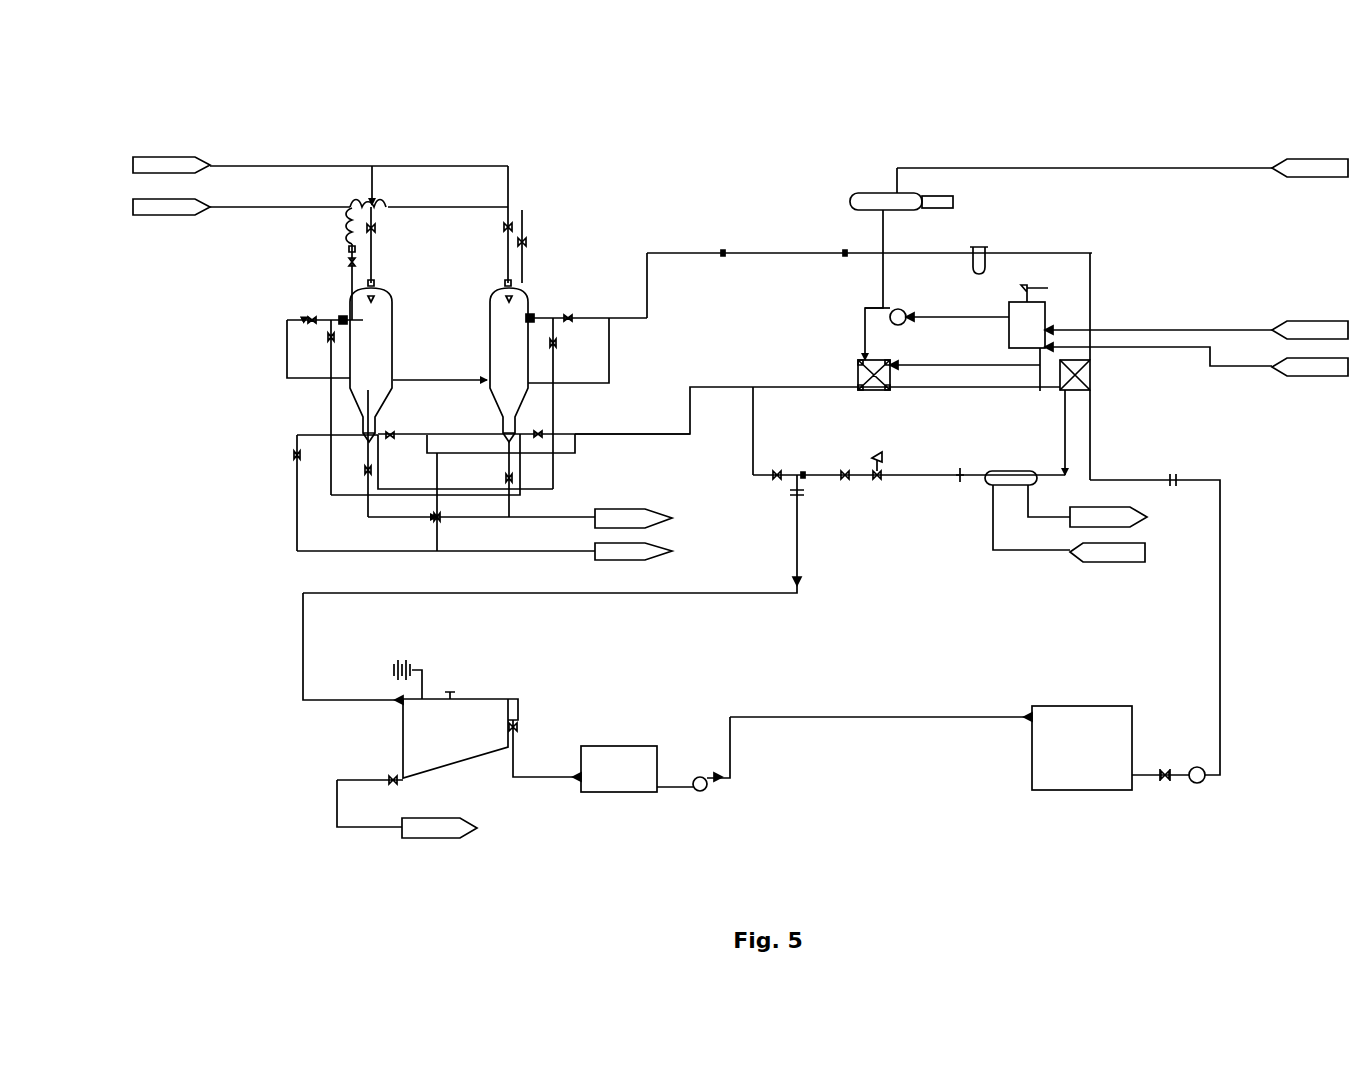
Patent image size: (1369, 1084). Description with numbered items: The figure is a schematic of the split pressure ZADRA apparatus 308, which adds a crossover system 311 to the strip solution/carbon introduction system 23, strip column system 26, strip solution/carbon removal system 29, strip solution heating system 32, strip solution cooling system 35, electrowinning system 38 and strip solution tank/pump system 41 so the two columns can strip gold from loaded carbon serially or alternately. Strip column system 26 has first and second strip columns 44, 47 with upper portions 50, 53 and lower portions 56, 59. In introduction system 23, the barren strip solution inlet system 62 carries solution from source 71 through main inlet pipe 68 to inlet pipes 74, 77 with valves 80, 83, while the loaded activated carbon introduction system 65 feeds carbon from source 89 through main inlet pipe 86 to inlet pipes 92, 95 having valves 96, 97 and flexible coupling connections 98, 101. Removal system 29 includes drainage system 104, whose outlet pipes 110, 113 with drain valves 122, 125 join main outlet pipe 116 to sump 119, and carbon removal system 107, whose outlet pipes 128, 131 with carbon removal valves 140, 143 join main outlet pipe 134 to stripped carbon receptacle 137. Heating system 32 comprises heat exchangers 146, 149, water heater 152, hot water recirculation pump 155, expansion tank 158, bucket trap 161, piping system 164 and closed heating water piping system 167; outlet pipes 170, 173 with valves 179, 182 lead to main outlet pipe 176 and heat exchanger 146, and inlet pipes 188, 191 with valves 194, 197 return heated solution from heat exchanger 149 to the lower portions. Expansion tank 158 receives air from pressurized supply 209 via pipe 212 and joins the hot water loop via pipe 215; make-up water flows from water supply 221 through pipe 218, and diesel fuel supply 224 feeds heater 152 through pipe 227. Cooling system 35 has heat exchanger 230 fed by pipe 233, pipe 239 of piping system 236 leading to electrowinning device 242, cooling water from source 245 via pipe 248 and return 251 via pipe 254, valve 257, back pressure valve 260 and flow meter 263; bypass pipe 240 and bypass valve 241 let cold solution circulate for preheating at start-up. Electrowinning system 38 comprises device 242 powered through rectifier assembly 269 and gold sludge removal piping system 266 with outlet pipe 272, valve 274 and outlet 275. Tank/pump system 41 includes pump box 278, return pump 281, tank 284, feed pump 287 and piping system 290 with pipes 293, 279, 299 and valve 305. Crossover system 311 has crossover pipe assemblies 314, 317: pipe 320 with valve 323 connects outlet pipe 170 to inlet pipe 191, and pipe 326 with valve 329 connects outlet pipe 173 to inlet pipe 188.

The strip solution/carbon introduction system 23 is at (456, 104).
The strip column system 26 is at (216, 277).
The strip solution/carbon removal system 29 is at (655, 490).
The strip solution heating system 32 is at (1130, 250).
The strip solution cooling system 35 is at (1130, 448).
The electrowinning system 38 is at (572, 673).
The strip solution tank/pump system 41 is at (880, 828).
The first strip column 44 is at (537, 292).
The second strip column 47 is at (400, 310).
The upper portion 50 is at (490, 330).
The upper portion 53 is at (393, 333).
The lower portion 56 is at (490, 400).
The lower portion 59 is at (393, 393).
The barren strip solution inlet system 62 is at (516, 163).
The loaded activated carbon introduction system 65 is at (337, 227).
The main inlet pipe 68 is at (300, 166).
The barren strip solution source 71 is at (186, 157).
The inlet pipe 74 is at (512, 182).
The inlet pipe 77 is at (378, 186).
The valve 80 is at (504, 229).
The valve 83 is at (376, 229).
The main inlet pipe 86 is at (235, 207).
The loaded activated carbon source 89 is at (177, 215).
The inlet pipe 92 is at (524, 218).
The inlet pipe 95 is at (347, 250).
The valve 96 is at (528, 243).
The valve 97 is at (350, 266).
The flexible coupling connection 98 is at (358, 193).
The flexible coupling connection 101 is at (348, 216).
The strip column solution drainage system 104 is at (558, 483).
The stripped activated carbon removal system 107 is at (246, 464).
The outlet pipe 110 is at (507, 511).
The outlet pipe 113 is at (366, 508).
The main outlet pipe 116 is at (584, 525).
The sump 119 is at (648, 510).
The drain valve 122 is at (504, 478).
The drain valve 125 is at (366, 472).
The outlet pipe 128 is at (436, 466).
The outlet pipe 131 is at (294, 514).
The main outlet pipe 134 is at (360, 553).
The stripped carbon receptacle 137 is at (640, 562).
The carbon removal valve 140 is at (442, 520).
The carbon removal valve 143 is at (293, 452).
The heat exchanger 146 is at (1096, 386).
The heat exchanger 149 is at (858, 376).
The water heater 152 is at (1047, 324).
The hot water recirculation pump 155 is at (904, 310).
The expansion tank 158 is at (868, 192).
The bucket trap 161 is at (982, 247).
The strip column to heating system piping system 164 is at (713, 218).
The closed heating water piping system 167 is at (846, 322).
The outlet pipe 170 is at (598, 316).
The outlet pipe 173 is at (286, 352).
The main outlet pipe 176 is at (790, 252).
The valve 179 is at (574, 314).
The valve 182 is at (310, 318).
The inlet pipe 188 is at (560, 432).
The inlet pipe 191 is at (428, 438).
The valve 194 is at (534, 431).
The valve 197 is at (392, 440).
The pressurized supply of air 209 is at (1290, 180).
The pipe 212 is at (1062, 166).
The pipe 215 is at (885, 240).
The pipe 218 is at (1182, 350).
The water supply 221 is at (1305, 378).
The diesel fuel supply 224 is at (1298, 320).
The pipe 227 is at (1188, 328).
The heat exchanger 230 is at (1000, 470).
The heating system to cooling system pipe 233 is at (1063, 418).
The cooling system to electrowinning system piping system 236 is at (903, 468).
The pipe 239 is at (800, 553).
The bypass pipe 240 is at (752, 446).
The bypass valve 241 is at (777, 484).
The electrowinning device 242 is at (470, 704).
The cooling water supply source 245 is at (1125, 565).
The pipe 248 is at (992, 528).
The cooling water return 251 is at (1147, 514).
The pipe 254 is at (1034, 500).
The valve 257 is at (846, 468).
The back pressure valve 260 is at (877, 455).
The flow meter 263 is at (958, 484).
The gold sludge removal piping system 266 is at (306, 778).
The rectifier assembly 269 is at (396, 660).
The outlet pipe 272 is at (335, 803).
The valve 274 is at (390, 772).
The outlet 275 is at (417, 840).
The barren strip solution pump tank 278 is at (615, 745).
The pipe 279 is at (843, 720).
The barren strip solution return pump 281 is at (700, 776).
The barren strip solution tank 284 is at (1135, 716).
The strip solution feed pump 287 is at (1203, 784).
The barren strip solution piping system 290 is at (900, 688).
The pipe 293 is at (548, 782).
The pipe 299 is at (1222, 630).
The valve 305 is at (1163, 768).
The split pressure ZADRA apparatus 308 is at (986, 100).
The crossover system 311 is at (620, 459).
The crossover pipe assembly 314 is at (578, 428).
The crossover pipe assembly 317 is at (356, 541).
The pipe 320 is at (552, 378).
The valve 323 is at (557, 343).
The pipe 326 is at (330, 426).
The valve 329 is at (329, 340).